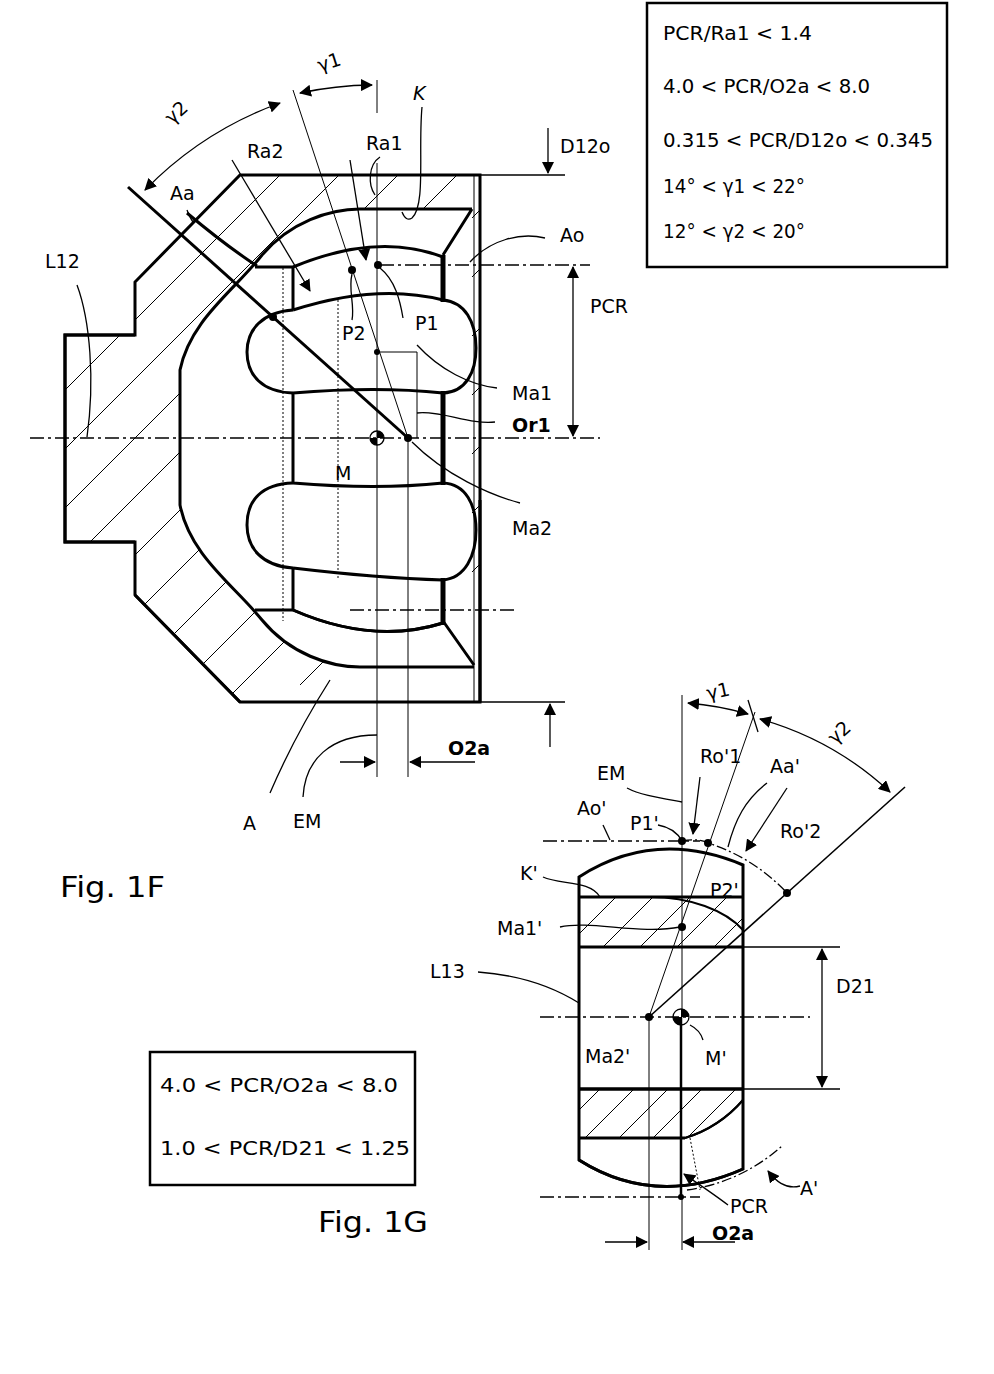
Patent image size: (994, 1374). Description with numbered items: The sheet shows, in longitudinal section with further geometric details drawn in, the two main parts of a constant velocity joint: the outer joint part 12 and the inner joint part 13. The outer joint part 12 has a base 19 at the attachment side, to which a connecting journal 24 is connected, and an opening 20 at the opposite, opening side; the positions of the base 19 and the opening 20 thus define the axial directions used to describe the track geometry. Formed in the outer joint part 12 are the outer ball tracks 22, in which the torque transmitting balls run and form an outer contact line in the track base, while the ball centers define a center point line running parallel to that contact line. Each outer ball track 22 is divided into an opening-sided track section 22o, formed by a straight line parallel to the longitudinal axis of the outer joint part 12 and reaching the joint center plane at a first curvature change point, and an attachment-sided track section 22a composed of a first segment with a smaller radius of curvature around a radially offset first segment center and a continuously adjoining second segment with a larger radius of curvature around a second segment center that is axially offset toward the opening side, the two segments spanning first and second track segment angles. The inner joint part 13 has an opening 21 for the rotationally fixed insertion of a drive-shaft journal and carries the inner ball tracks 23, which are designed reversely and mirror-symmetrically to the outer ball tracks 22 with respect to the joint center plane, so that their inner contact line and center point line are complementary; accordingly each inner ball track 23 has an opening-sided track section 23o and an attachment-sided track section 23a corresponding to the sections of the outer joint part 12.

In FIG. 1F, the outer joint part 12 is at (445, 168).
In FIG. 1F, the base 19 is at (197, 635).
In FIG. 1F, the opening 20 is at (535, 577).
In FIG. 1F, the outer ball tracks 22 is at (440, 648).
In FIG. 1F, the opening-sided track section 22o is at (445, 227).
In FIG. 1F, the attachment-sided track section 22a is at (307, 637).
In FIG. 1F, the connecting journal 24 is at (93, 527).
In FIG. 1G, the inner joint part 13 is at (538, 1096).
In FIG. 1G, the opening 21 is at (730, 1086).
In FIG. 1G, the inner ball tracks 23 is at (594, 1153).
In FIG. 1G, the attachment-sided track section of the inner ball track 23a is at (733, 1142).
In FIG. 1G, the opening-sided track section of the inner ball track 23o is at (612, 1162).